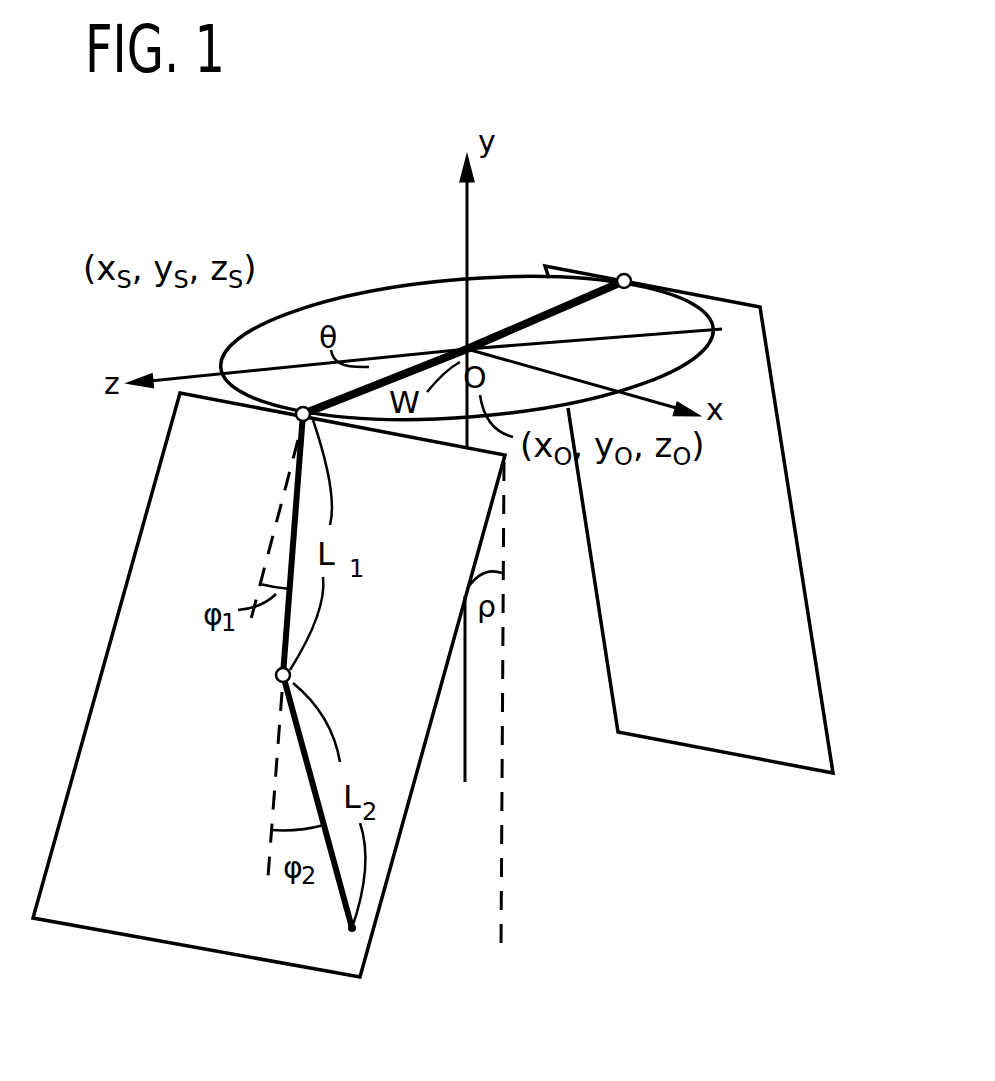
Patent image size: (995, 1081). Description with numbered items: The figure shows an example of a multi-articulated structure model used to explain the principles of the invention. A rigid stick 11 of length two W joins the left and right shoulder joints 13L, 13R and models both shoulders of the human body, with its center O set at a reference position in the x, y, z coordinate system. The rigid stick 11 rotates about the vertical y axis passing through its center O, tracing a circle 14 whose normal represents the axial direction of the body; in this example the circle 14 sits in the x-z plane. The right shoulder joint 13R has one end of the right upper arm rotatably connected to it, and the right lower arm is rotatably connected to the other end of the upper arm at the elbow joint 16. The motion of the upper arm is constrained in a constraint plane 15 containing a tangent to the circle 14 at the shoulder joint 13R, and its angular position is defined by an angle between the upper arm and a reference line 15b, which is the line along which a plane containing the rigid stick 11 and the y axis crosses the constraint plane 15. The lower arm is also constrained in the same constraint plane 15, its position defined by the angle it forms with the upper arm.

The rigid stick 11 is at (545, 314).
The left shoulder joint 13L is at (626, 273).
The right shoulder joint 13R is at (302, 404).
The circle of rotation 14 is at (423, 280).
The constraint plane 15 is at (140, 940).
The reference line 15b is at (268, 550).
The elbow joint 16 is at (283, 682).